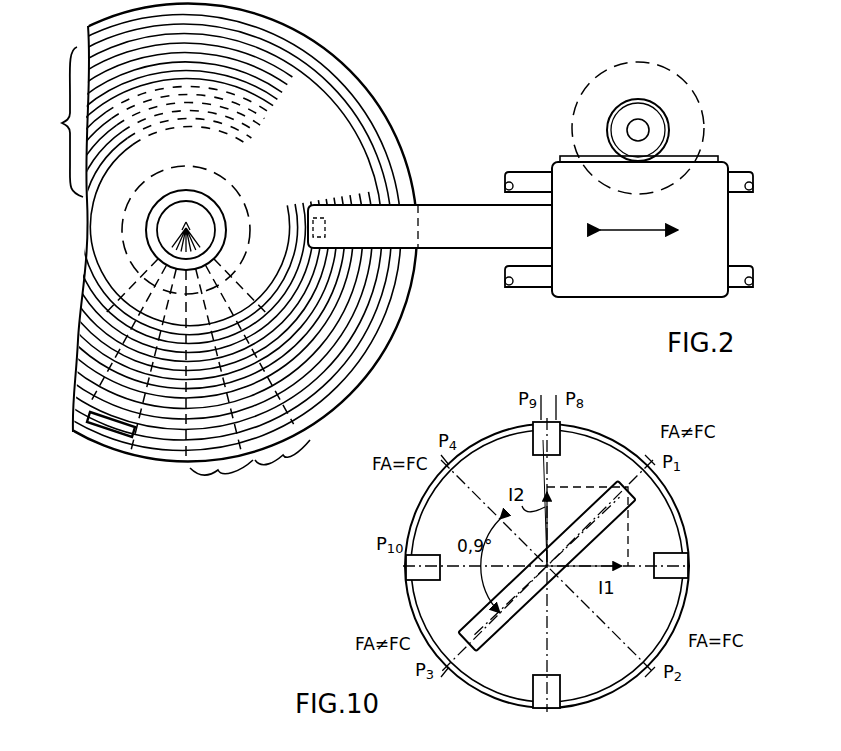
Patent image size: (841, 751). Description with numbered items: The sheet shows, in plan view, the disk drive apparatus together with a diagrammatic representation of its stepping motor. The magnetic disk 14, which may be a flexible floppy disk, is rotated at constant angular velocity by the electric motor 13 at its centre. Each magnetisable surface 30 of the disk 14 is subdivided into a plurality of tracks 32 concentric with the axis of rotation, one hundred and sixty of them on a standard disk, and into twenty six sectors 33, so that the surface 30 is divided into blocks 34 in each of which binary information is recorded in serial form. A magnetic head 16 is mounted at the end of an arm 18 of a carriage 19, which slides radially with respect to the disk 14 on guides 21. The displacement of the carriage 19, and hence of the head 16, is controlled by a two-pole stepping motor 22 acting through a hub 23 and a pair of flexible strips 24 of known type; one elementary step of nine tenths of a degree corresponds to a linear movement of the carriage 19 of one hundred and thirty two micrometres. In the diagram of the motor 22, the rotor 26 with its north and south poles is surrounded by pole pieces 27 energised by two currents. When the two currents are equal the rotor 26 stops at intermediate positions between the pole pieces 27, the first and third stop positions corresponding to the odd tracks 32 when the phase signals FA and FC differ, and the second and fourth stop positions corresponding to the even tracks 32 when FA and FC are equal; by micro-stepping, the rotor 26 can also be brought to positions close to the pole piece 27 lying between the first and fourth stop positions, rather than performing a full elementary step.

In FIG. 2, the electric motor 13 is at (118, 219).
In FIG. 2, the magnetic disk 14 is at (212, 233).
In FIG. 2, the magnetic head 16 is at (327, 226).
In FIG. 2, the arm 18 is at (437, 228).
In FIG. 2, the carriage 19 is at (622, 282).
In FIG. 2, the guides 21 is at (522, 178).
In FIG. 2, the stepping motor 22 is at (688, 76).
In FIG. 10, the stepping motor 22 is at (403, 599).
In FIG. 2, the hub 23 is at (658, 133).
In FIG. 2, the flexible strips 24 is at (706, 160).
In FIG. 10, the rotor 26 is at (516, 608).
In FIG. 10, the pole pieces 27 is at (533, 425).
In FIG. 2, the magnetisable surface 30 is at (340, 62).
In FIG. 2, the tracks 32 is at (59, 122).
In FIG. 2, the sectors 33 is at (250, 467).
In FIG. 2, the blocks 34 is at (110, 437).